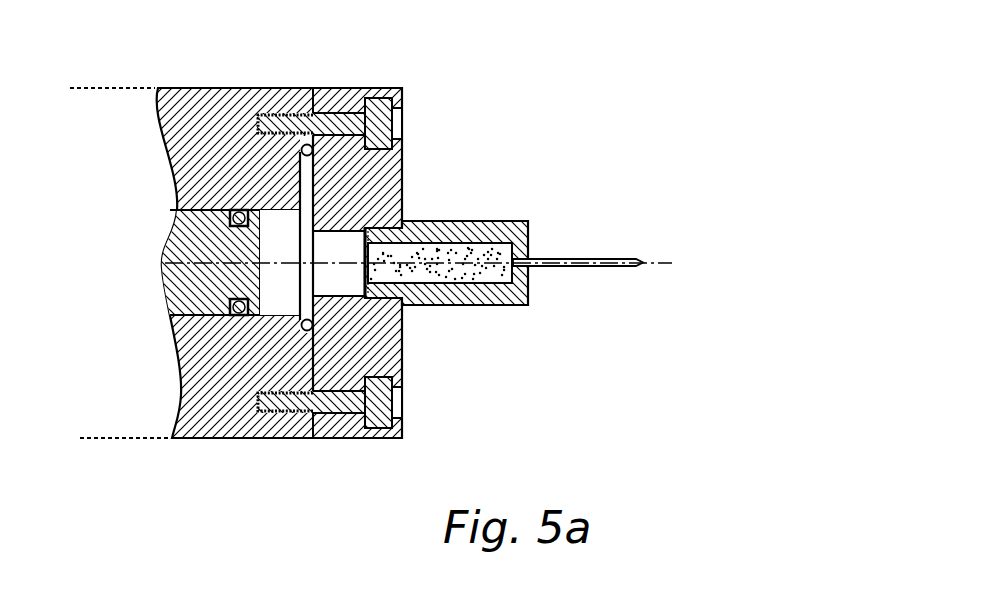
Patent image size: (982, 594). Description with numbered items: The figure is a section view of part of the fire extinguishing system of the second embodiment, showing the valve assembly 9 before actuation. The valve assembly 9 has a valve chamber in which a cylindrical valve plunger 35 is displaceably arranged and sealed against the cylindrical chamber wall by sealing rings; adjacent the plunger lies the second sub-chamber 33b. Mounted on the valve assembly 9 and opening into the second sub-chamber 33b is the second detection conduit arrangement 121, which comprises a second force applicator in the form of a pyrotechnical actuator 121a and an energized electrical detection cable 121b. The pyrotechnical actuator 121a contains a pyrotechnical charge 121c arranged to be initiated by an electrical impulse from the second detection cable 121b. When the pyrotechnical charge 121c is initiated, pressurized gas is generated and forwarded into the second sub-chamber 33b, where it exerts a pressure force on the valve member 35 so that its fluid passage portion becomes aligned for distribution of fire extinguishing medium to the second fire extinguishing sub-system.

The valve assembly 9 is at (282, 88).
The valve plunger 35 is at (191, 270).
The second sub-chamber 33b is at (273, 230).
The second detection conduit arrangement 121 is at (533, 201).
The pyrotechnical actuator 121a is at (477, 220).
The second detection cable 121b is at (562, 257).
The pyrotechnical charge 121c is at (450, 270).